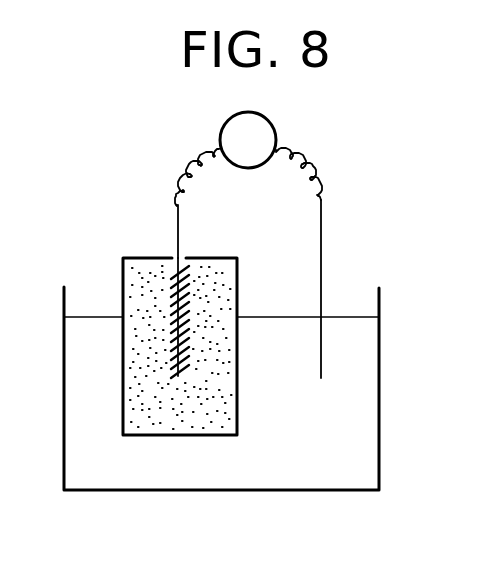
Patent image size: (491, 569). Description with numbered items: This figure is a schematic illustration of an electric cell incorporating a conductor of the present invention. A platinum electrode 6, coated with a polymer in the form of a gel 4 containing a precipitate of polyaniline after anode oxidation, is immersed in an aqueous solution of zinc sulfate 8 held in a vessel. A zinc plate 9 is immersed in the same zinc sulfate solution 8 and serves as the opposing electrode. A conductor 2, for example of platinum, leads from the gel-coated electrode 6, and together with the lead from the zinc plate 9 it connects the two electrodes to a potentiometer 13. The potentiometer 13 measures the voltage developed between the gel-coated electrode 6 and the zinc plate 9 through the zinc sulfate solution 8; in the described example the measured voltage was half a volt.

The conductor 2 is at (177, 222).
The polymer in the form of a gel 4 is at (123, 275).
The platinum electrode coated with a gel containing precipitate of polyaniline after 6 is at (186, 437).
The aqueous solution of zinc sulfate 8 is at (380, 378).
The zinc plate 9 is at (322, 232).
The potentiometer 13 is at (276, 128).